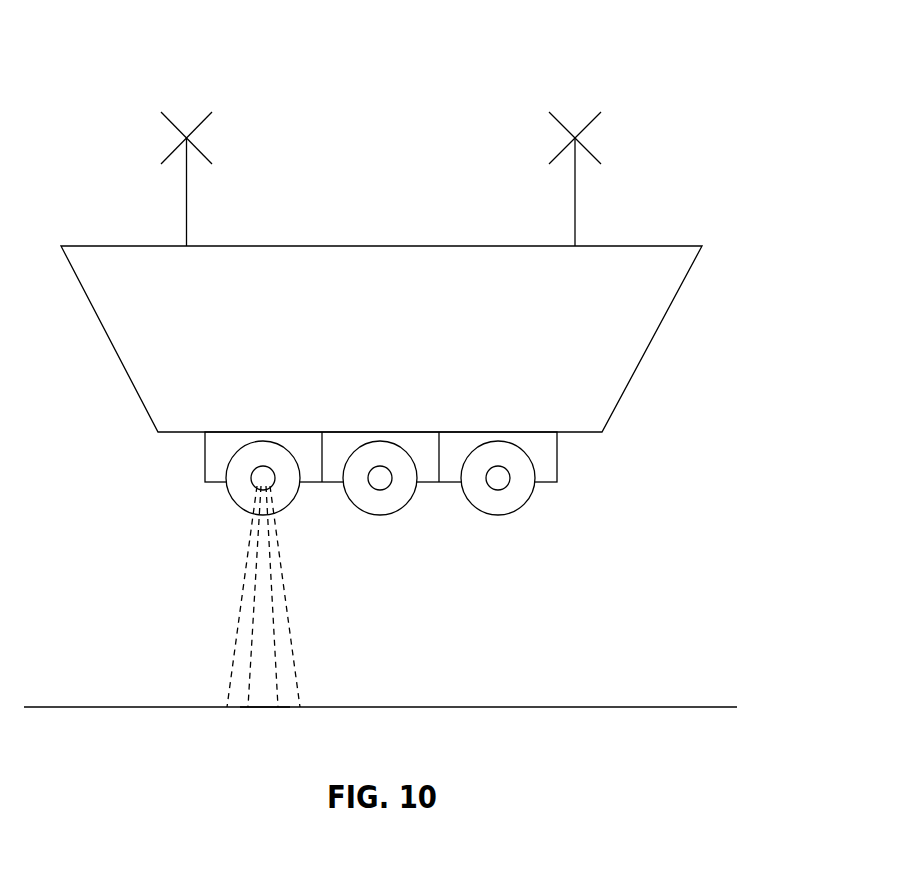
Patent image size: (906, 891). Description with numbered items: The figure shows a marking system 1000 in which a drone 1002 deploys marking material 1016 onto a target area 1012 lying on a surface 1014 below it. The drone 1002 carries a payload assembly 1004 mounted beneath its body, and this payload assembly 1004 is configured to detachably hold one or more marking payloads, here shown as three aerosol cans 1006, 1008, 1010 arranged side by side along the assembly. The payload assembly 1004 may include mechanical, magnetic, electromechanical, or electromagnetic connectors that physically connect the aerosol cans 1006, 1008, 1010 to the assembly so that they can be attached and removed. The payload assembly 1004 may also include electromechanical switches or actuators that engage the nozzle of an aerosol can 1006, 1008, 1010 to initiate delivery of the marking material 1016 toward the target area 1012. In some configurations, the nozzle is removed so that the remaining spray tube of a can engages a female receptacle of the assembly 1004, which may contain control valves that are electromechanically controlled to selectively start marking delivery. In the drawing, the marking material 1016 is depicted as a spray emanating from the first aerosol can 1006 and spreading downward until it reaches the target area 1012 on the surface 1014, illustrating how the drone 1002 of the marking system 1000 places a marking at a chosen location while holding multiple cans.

The marking system 1000 is at (136, 52).
The drone 1002 is at (150, 245).
The payload assembly 1004 is at (558, 458).
The aerosol can 1006 is at (229, 492).
The aerosol can 1008 is at (382, 514).
The aerosol can 1010 is at (497, 514).
The target area 1012 is at (258, 722).
The surface 1014 is at (578, 707).
The marking material 1016 is at (293, 657).